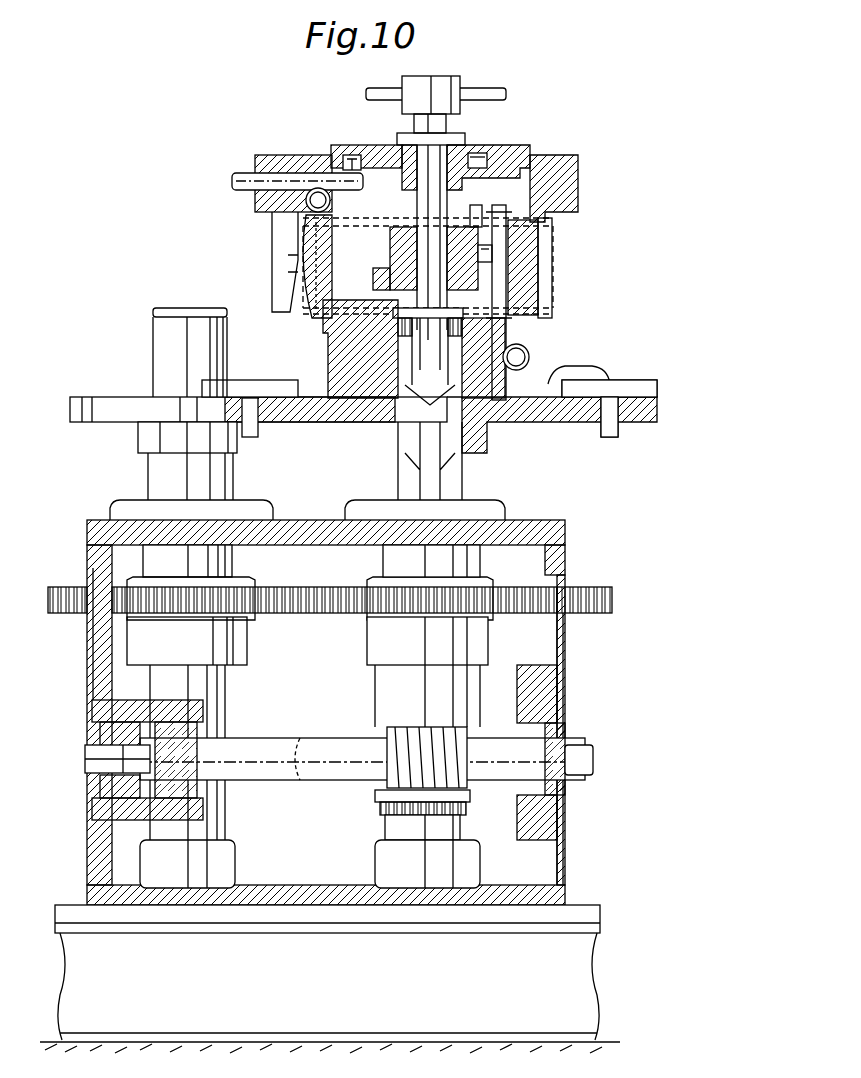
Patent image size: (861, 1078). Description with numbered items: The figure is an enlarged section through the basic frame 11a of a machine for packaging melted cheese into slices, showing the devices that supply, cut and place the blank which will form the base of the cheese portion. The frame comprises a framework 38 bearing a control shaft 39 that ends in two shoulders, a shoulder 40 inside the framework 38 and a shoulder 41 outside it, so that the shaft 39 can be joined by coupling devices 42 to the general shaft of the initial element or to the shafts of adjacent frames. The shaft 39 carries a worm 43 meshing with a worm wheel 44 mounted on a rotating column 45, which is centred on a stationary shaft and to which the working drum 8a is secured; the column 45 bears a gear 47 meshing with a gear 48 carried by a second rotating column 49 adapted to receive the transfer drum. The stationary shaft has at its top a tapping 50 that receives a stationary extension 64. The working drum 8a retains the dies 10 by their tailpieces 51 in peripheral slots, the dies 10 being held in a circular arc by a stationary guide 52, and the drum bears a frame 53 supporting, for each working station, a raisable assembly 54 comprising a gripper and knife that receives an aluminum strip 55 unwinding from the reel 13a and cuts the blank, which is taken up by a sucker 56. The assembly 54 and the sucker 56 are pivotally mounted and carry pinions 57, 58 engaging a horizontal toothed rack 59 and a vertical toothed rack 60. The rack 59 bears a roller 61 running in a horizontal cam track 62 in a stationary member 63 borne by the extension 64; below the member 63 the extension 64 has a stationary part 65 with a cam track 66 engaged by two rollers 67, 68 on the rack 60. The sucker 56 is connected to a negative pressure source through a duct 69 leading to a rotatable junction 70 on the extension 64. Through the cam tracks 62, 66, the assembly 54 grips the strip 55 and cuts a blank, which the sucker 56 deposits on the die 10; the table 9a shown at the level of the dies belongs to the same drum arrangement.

The working drum 8a is at (540, 424).
The table plate 9a is at (100, 408).
The die 10 is at (275, 388).
The basic frame 11a is at (197, 228).
The reel 13a is at (544, 280).
The framework 38 is at (555, 525).
The control shaft 39 is at (242, 745).
The shoulder 40 is at (135, 758).
The shoulder 41 is at (578, 748).
The coupling devices 42 is at (100, 745).
The worm 43 is at (398, 780).
The worm wheel 44 is at (392, 735).
The rotating column 45 is at (384, 680).
The gear 47 is at (590, 588).
The gear 48 is at (62, 596).
The rotating column 49 is at (228, 565).
The tapping 50 is at (455, 348).
The tailpiece 51 is at (259, 432).
The stationary guide 52 is at (212, 420).
The frame 53 is at (342, 356).
The assembly 54 is at (276, 232).
The aluminum strip 55 is at (320, 262).
The sucker 56 is at (595, 378).
The pinion 57 is at (331, 204).
The pinion 58 is at (530, 356).
The horizontal toothed rack 59 is at (242, 175).
The vertical toothed rack 60 is at (500, 285).
The roller 61 is at (354, 153).
The horizontal cam track 62 is at (482, 152).
The stationary member 63 is at (540, 156).
The stationary extension 64 is at (442, 220).
The stationary part 65 is at (400, 262).
The cam track 66 is at (382, 284).
The roller 67 is at (485, 215).
The roller 68 is at (492, 258).
The duct 69 is at (492, 94).
The rotatable junction 70 is at (444, 84).